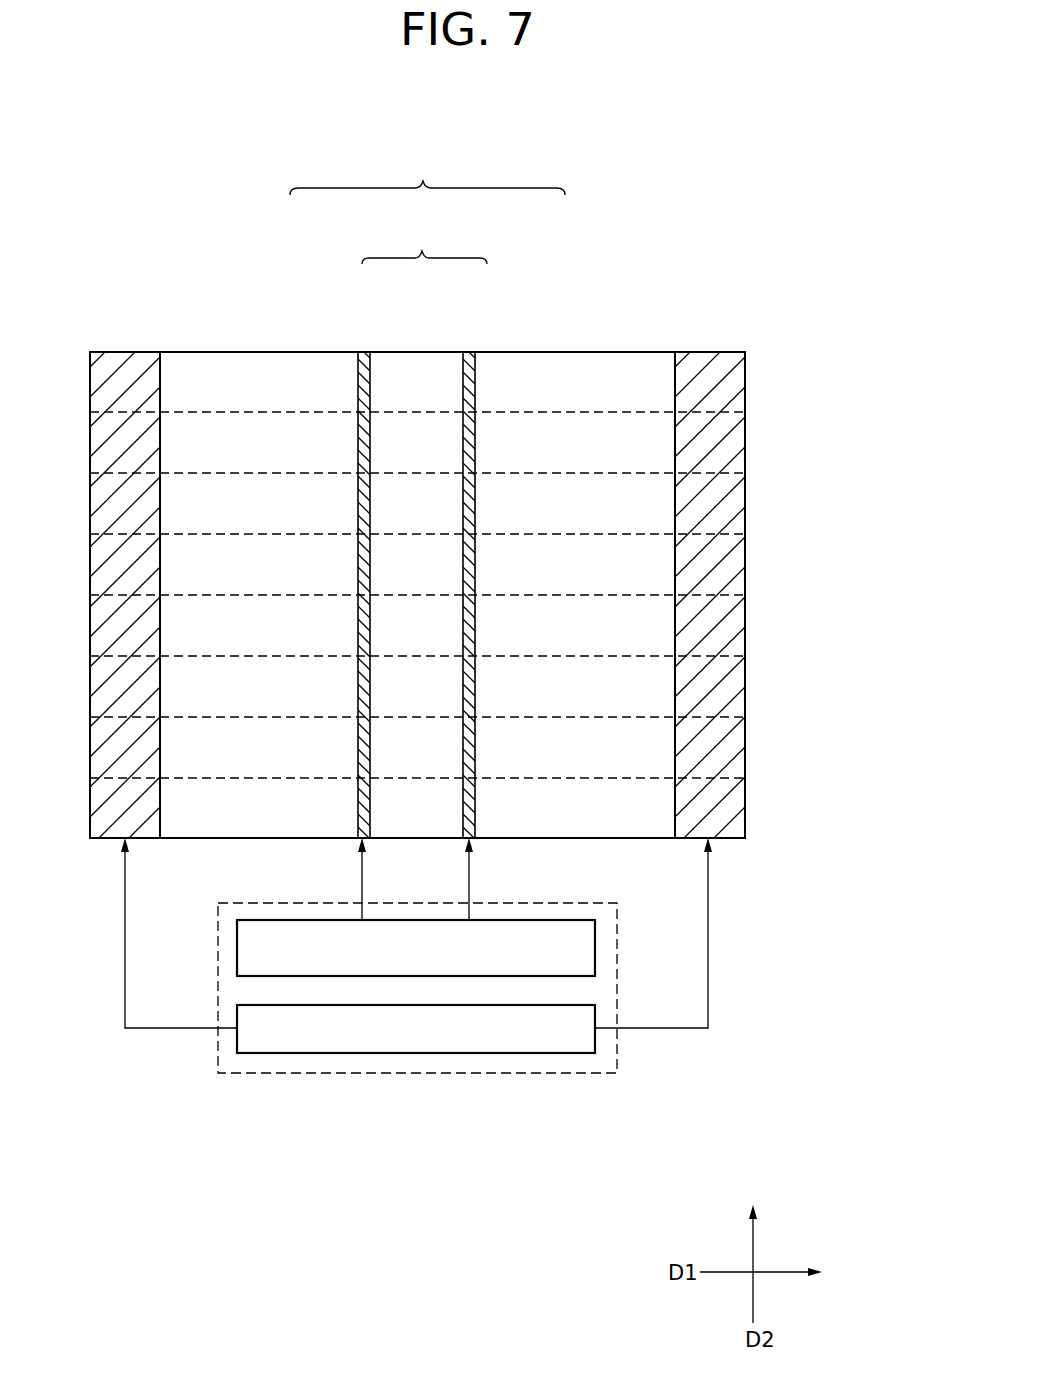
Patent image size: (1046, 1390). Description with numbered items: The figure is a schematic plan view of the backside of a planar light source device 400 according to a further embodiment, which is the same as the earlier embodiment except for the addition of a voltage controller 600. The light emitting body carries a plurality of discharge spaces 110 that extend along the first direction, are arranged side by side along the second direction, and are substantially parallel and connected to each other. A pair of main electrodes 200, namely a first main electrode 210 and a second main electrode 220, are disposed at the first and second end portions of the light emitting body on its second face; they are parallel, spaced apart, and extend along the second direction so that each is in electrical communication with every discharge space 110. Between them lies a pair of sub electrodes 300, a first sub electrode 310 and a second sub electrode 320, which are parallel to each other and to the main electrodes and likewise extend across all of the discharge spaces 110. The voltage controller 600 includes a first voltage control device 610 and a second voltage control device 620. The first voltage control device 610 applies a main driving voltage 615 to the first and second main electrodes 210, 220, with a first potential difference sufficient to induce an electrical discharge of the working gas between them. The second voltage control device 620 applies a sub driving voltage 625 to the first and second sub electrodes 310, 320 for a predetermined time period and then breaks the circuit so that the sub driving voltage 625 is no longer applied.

The discharge spaces 110 is at (590, 398).
The main electrodes 200 is at (427, 174).
The first main electrode 210 is at (135, 346).
The second main electrode 220 is at (700, 346).
The sub electrodes 300 is at (424, 244).
The first sub electrode 310 is at (364, 340).
The second sub electrode 320 is at (467, 340).
The planar light source device 400 is at (771, 280).
The voltage controller 600 is at (531, 1073).
The first voltage control device 610 is at (595, 1047).
The main driving voltage 615 is at (708, 945).
The second voltage control device 620 is at (595, 945).
The sub driving voltage 625 is at (469, 877).